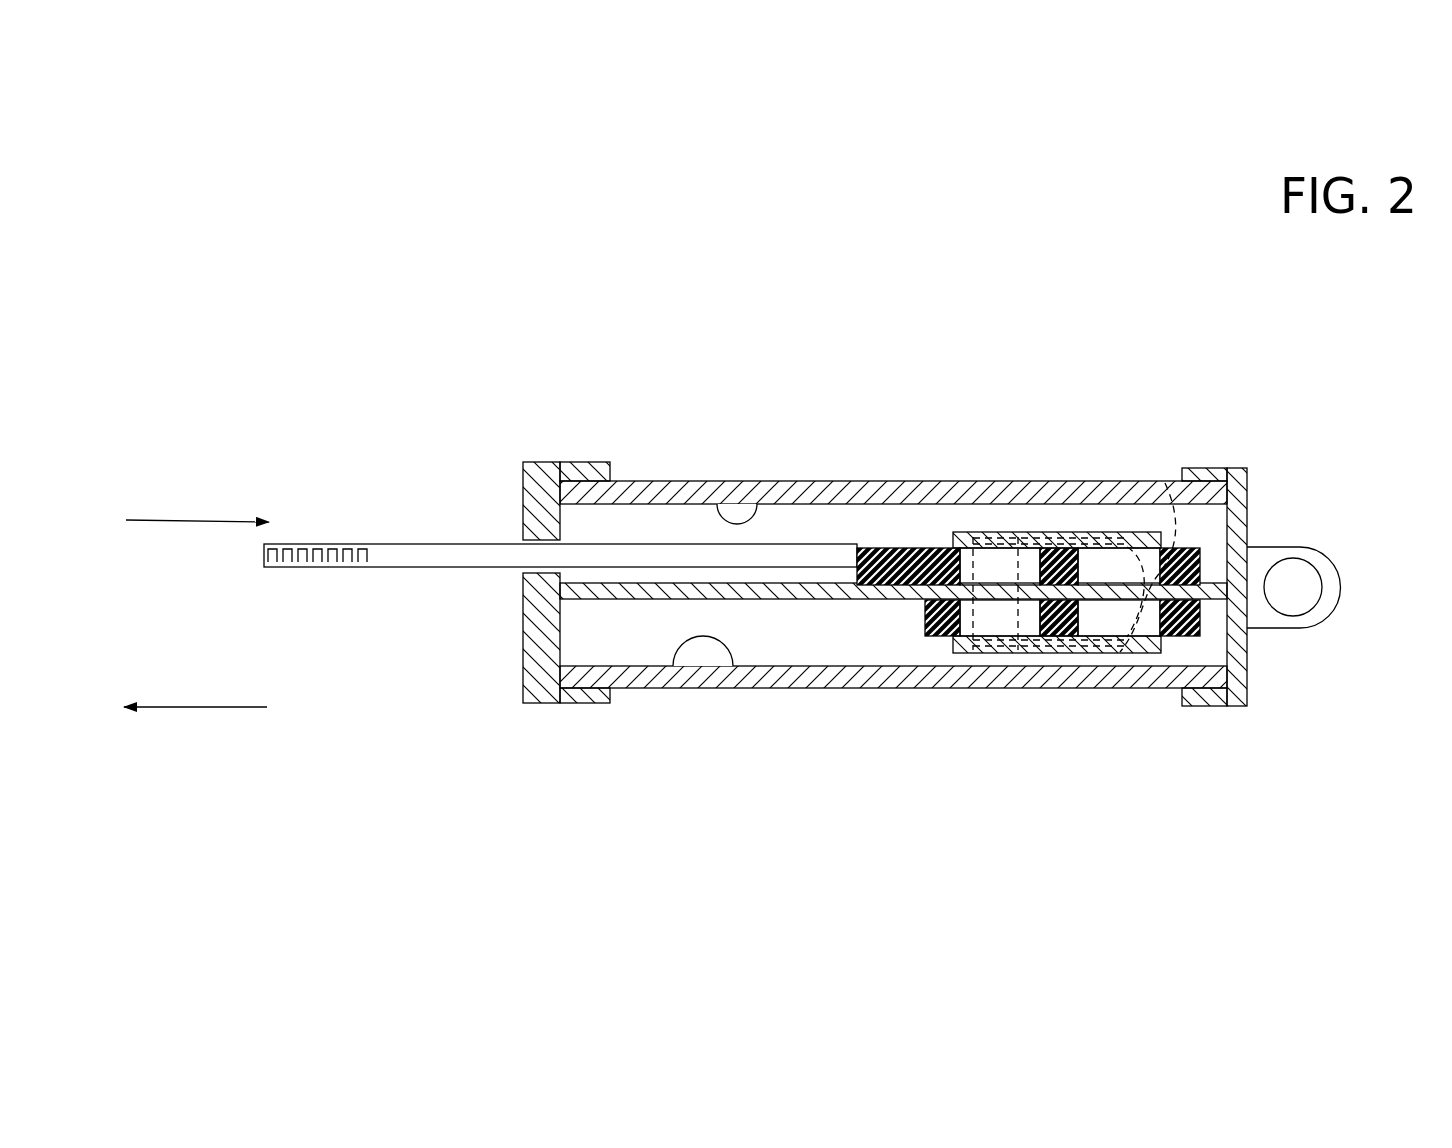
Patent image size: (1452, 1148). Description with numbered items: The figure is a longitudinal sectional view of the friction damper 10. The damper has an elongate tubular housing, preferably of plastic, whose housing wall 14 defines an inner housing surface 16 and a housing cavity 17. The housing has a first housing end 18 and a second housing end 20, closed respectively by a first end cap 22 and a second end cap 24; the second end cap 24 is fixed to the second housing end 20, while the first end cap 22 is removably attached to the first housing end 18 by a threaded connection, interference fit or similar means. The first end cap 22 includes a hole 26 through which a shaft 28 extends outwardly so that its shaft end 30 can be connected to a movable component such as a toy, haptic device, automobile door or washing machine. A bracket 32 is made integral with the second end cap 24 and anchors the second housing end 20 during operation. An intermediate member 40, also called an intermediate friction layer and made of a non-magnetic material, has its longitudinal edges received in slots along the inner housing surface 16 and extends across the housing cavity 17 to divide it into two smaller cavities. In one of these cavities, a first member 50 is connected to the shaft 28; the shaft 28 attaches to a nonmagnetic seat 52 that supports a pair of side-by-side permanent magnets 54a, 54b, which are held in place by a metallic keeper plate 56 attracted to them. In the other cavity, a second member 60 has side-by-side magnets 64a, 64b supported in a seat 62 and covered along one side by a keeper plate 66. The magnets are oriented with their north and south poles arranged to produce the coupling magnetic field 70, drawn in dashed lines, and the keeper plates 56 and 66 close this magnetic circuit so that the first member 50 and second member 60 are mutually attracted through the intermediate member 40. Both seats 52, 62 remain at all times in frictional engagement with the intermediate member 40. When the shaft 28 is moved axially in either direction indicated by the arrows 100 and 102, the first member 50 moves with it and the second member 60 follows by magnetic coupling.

The friction damper 10 is at (888, 365).
The housing wall 14 is at (848, 487).
The inner housing surface 16 is at (717, 488).
The housing cavity 17 is at (753, 647).
The first housing end 18 is at (575, 487).
The second housing end 20 is at (1200, 492).
The first end cap 22 is at (533, 480).
The second end cap 24 is at (1245, 518).
The hole 26 is at (525, 549).
The shaft 28 is at (451, 560).
The shaft end 30 is at (302, 565).
The bracket 32 is at (1260, 613).
The intermediate member 40 is at (652, 590).
The first member 50 is at (925, 525).
The seat 52 is at (1197, 565).
The permanent magnet 54a is at (1010, 557).
The permanent magnet 54b is at (1108, 557).
The keeper plate 56 is at (988, 538).
The second member 60 is at (938, 647).
The seat 62 is at (1197, 627).
The magnet 64a is at (1010, 632).
The magnet 64b is at (1105, 632).
The keeper plate 66 is at (982, 652).
The magnetic field 70 is at (1165, 482).
The arrow 100 is at (196, 518).
The arrow 102 is at (211, 707).